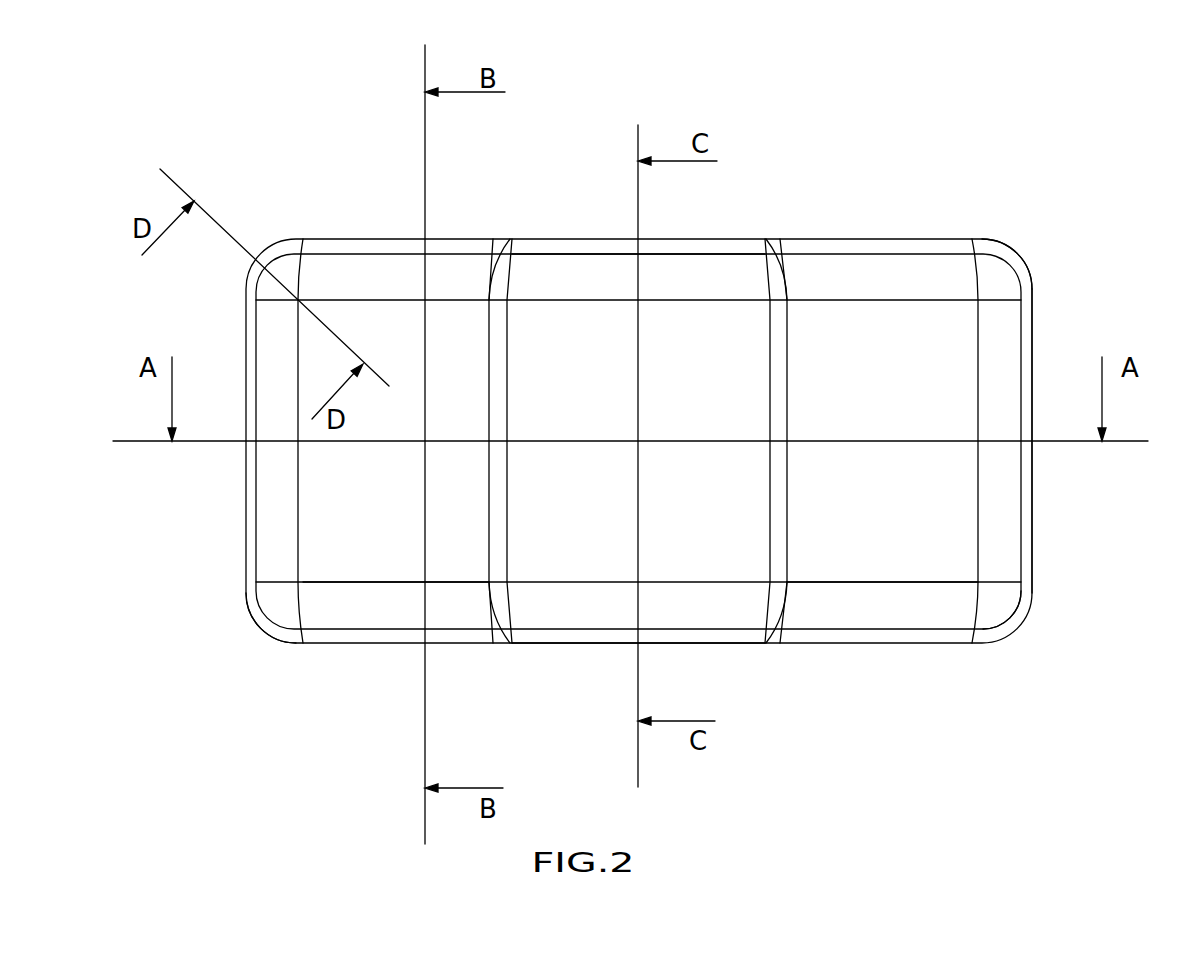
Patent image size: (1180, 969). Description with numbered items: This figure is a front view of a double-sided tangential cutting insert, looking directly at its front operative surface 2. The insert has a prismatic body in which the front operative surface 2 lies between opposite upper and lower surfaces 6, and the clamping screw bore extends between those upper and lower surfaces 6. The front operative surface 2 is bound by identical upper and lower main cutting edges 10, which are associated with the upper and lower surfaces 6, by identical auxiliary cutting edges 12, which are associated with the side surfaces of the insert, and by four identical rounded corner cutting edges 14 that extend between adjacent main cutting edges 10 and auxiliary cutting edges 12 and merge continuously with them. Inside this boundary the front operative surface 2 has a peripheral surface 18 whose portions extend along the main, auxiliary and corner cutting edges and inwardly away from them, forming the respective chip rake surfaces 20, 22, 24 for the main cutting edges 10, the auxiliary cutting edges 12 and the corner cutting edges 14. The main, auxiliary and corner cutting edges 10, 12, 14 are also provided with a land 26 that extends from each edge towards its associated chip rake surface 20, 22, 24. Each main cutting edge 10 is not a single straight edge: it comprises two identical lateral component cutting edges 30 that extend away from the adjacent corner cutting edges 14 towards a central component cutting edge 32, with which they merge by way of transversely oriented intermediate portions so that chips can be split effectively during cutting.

The front operative surface 2 is at (665, 413).
The upper and lower surfaces 6 is at (562, 220).
The main cutting edges 10 is at (929, 238).
The auxiliary cutting edges 12 is at (1033, 500).
The corner cutting edges 14 is at (1017, 255).
The peripheral surface 18 is at (379, 600).
The chip rake surface 20 is at (835, 603).
The chip rake surface 22 is at (995, 545).
The chip rake surface 24 is at (993, 275).
The land 26 is at (261, 630).
The lateral component cutting edges 30 is at (458, 239).
The central component cutting edge 32 is at (735, 239).